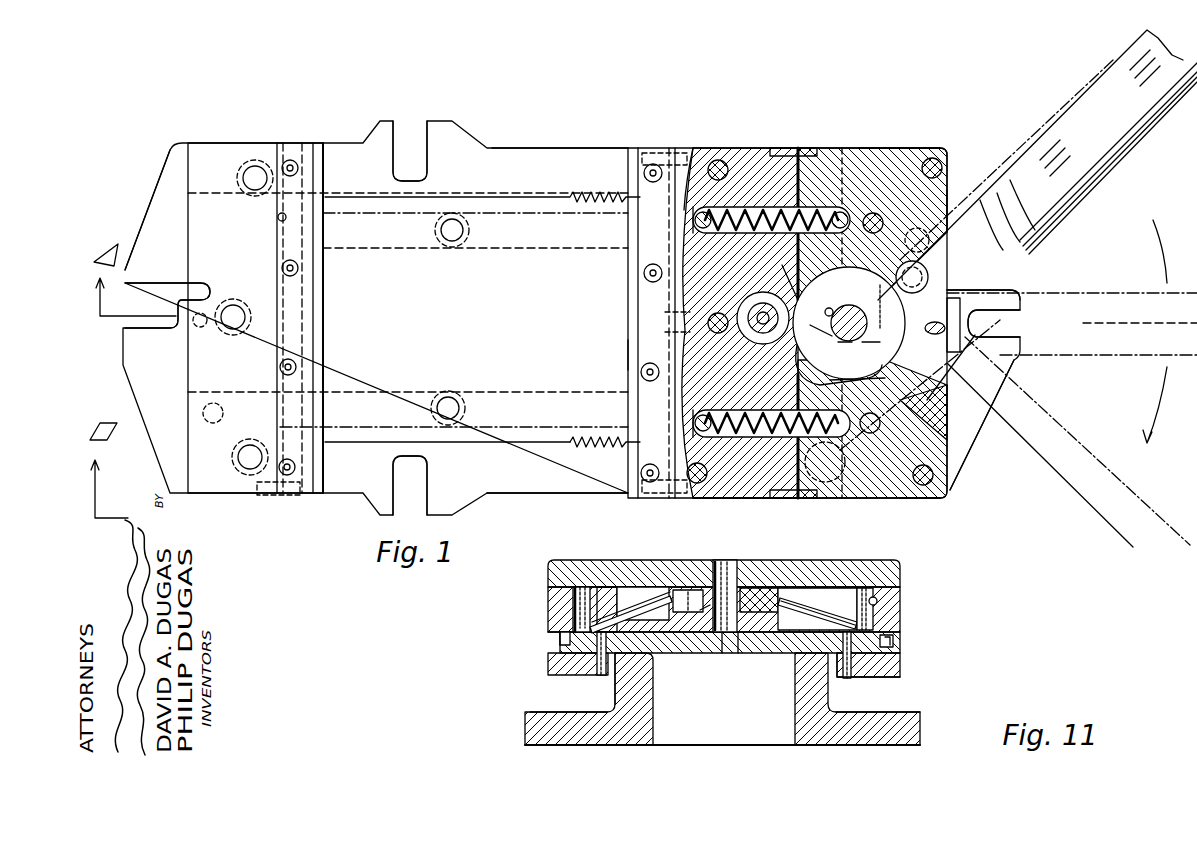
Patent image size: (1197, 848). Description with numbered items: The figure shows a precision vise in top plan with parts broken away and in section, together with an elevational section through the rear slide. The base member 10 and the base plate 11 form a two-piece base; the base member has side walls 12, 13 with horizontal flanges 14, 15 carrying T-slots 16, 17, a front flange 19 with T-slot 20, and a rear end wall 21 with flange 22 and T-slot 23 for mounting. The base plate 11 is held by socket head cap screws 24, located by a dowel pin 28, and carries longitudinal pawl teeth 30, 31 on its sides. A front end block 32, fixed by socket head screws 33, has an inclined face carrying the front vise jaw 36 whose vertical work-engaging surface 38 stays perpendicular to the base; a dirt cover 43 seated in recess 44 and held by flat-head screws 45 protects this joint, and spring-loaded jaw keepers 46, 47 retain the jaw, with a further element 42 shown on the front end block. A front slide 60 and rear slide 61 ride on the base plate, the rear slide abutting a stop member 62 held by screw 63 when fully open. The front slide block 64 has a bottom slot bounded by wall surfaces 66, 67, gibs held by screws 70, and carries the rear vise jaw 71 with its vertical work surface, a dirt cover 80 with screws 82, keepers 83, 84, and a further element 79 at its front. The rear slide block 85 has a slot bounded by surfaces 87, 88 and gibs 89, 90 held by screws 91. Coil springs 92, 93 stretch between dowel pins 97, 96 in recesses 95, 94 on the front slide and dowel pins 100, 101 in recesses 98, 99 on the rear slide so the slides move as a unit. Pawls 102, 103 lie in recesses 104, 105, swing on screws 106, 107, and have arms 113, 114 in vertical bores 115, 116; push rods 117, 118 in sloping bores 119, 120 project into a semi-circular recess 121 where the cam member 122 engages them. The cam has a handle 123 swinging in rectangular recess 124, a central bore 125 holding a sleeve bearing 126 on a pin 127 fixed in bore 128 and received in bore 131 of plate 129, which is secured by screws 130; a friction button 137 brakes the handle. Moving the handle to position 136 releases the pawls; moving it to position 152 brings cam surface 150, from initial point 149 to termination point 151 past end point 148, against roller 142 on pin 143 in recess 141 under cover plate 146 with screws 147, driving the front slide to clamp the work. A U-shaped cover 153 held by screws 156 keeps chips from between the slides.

In FIG. 1, the base member 10 is at (566, 509).
In FIG. 11, the base member 10 is at (515, 723).
In FIG. 1, the base plate 11 is at (518, 440).
In FIG. 11, the base plate 11 is at (696, 650).
In FIG. 1, the side wall 12 is at (472, 245).
In FIG. 11, the side wall 12 is at (654, 707).
In FIG. 1, the side wall 13 is at (503, 392).
In FIG. 11, the side wall 13 is at (795, 704).
In FIG. 1, the horizontal flange 14 is at (532, 155).
In FIG. 11, the horizontal flange 14 is at (567, 718).
In FIG. 1, the horizontal flange 15 is at (588, 490).
In FIG. 11, the horizontal flange 15 is at (912, 725).
In FIG. 1, the T-slot 16 is at (426, 128).
In FIG. 1, the T-slot 17 is at (416, 505).
In FIG. 1, the horizontal flange 19 is at (153, 200).
In FIG. 1, the T-slot 20 is at (123, 332).
In FIG. 11, the rear end wall 21 is at (730, 745).
In FIG. 1, the horizontal flange 22 is at (955, 465).
In FIG. 1, the T-slot 23 is at (1010, 328).
In FIG. 1, the socket head cap screw 24 is at (446, 244).
In FIG. 1, the dowel pin 28 is at (218, 404).
In FIG. 1, the pawl teeth 30 is at (590, 447).
In FIG. 11, the pawl teeth 30 is at (848, 682).
In FIG. 1, the pawl teeth 31 is at (607, 186).
In FIG. 11, the pawl teeth 31 is at (600, 675).
In FIG. 1, the front end block 32 is at (220, 140).
In FIG. 1, the socket head screw 33 is at (256, 160).
In FIG. 1, the front vise jaw 36 is at (336, 321).
In FIG. 1, the work-engaging surface 38 is at (328, 350).
In FIG. 1, the bar 42 is at (318, 470).
In FIG. 1, the dirt cover 43 is at (300, 293).
In FIG. 1, the transversely extended recess 44 is at (277, 218).
In FIG. 1, the flat-head screw 45 is at (292, 162).
In FIG. 1, the jaw keeper 46 is at (286, 498).
In FIG. 1, the jaw keeper 47 is at (285, 150).
In FIG. 1, the front slide 60 is at (716, 498).
In FIG. 1, the rear slide 61 is at (920, 500).
In FIG. 11, the rear slide 61 is at (898, 582).
In FIG. 1, the stop member 62 is at (982, 290).
In FIG. 1, the flat-headed screw 63 is at (975, 350).
In FIG. 1, the front slide block 64 is at (752, 498).
In FIG. 1, the slot wall surface 66 is at (735, 440).
In FIG. 1, the slot wall surface 67 is at (728, 195).
In FIG. 1, the flat-headed screw 70 is at (724, 160).
In FIG. 1, the rear vise jaw 71 is at (618, 336).
In FIG. 1, the edge 79 is at (630, 350).
In FIG. 1, the dirt cover 80 is at (628, 298).
In FIG. 1, the flat-headed screw 82 is at (645, 168).
In FIG. 1, the jaw keeper 83 is at (655, 497).
In FIG. 1, the jaw keeper 84 is at (660, 150).
In FIG. 1, the rear slide block 85 is at (928, 498).
In FIG. 11, the rear slide block 85 is at (895, 642).
In FIG. 1, the slot wall surface 87 is at (928, 430).
In FIG. 1, the slot wall surface 88 is at (920, 228).
In FIG. 1, the gib 89 is at (947, 205).
In FIG. 11, the gib 89 is at (900, 672).
In FIG. 11, the gib 90 is at (552, 670).
In FIG. 1, the flat-headed screw 91 is at (935, 160).
In FIG. 1, the coil spring 92 is at (738, 236).
In FIG. 1, the coil spring 93 is at (742, 410).
In FIG. 1, the longitudinal recess 94 is at (690, 238).
In FIG. 1, the longitudinal recess 95 is at (712, 400).
In FIG. 1, the dowel pin 96 is at (696, 222).
In FIG. 1, the dowel pin 97 is at (696, 423).
In FIG. 1, the recess 98 is at (848, 236).
In FIG. 1, the recess 99 is at (860, 385).
In FIG. 1, the dowel pin 100 is at (835, 282).
In FIG. 1, the dowel pin 101 is at (850, 420).
In FIG. 1, the pawl 102 is at (878, 470).
In FIG. 11, the pawl 102 is at (880, 677).
In FIG. 1, the pawl 103 is at (885, 152).
In FIG. 11, the pawl 103 is at (560, 648).
In FIG. 11, the recess 104 is at (895, 650).
In FIG. 11, the recess 105 is at (563, 645).
In FIG. 1, the round-head socket screw 106 is at (840, 490).
In FIG. 1, the round-head socket screw 107 is at (845, 150).
In FIG. 11, the arm 113 is at (870, 632).
In FIG. 11, the arm 114 is at (575, 622).
In FIG. 11, the vertical bore 115 is at (880, 608).
In FIG. 11, the vertical bore 116 is at (572, 600).
In FIG. 11, the push rod 117 is at (800, 598).
In FIG. 11, the push rod 118 is at (600, 600).
In FIG. 11, the sloping bore 119 is at (862, 585).
In FIG. 11, the sloping bore 120 is at (636, 590).
In FIG. 1, the semi-circular recess 121 is at (792, 290).
In FIG. 11, the semi-circular recess 121 is at (780, 595).
In FIG. 1, the cam member 122 is at (890, 352).
In FIG. 11, the cam member 122 is at (682, 595).
In FIG. 1, the handle 123 is at (1162, 160).
In FIG. 1, the rectangular recess 124 is at (917, 420).
In FIG. 1, the central bore 125 is at (838, 350).
In FIG. 11, the central bore 125 is at (740, 640).
In FIG. 1, the sleeve bearing 126 is at (836, 314).
In FIG. 11, the sleeve bearing 126 is at (703, 612).
In FIG. 1, the pin 127 is at (852, 308).
In FIG. 11, the pin 127 is at (735, 590).
In FIG. 11, the bore 128 is at (727, 655).
In FIG. 11, the plate 129 is at (572, 570).
In FIG. 1, the round-head socket screw 130 is at (948, 183).
In FIG. 11, the bore 131 is at (720, 580).
In FIG. 1, the dotted line position 136 is at (1085, 82).
In FIG. 1, the friction button 137 is at (925, 270).
In FIG. 1, the recess 141 is at (765, 298).
In FIG. 1, the roller member 142 is at (755, 335).
In FIG. 1, the pin 143 is at (742, 308).
In FIG. 1, the cover plate 146 is at (698, 150).
In FIG. 1, the flat-headed screw 147 is at (680, 322).
In FIG. 1, the end point 148 is at (815, 322).
In FIG. 1, the initial point 149 is at (758, 350).
In FIG. 1, the cam surface 150 is at (843, 343).
In FIG. 1, the termination point 151 is at (870, 343).
In FIG. 1, the dotted line position 152 is at (1060, 425).
In FIG. 1, the cover 153 is at (800, 150).
In FIG. 1, the screw 156 is at (788, 148).